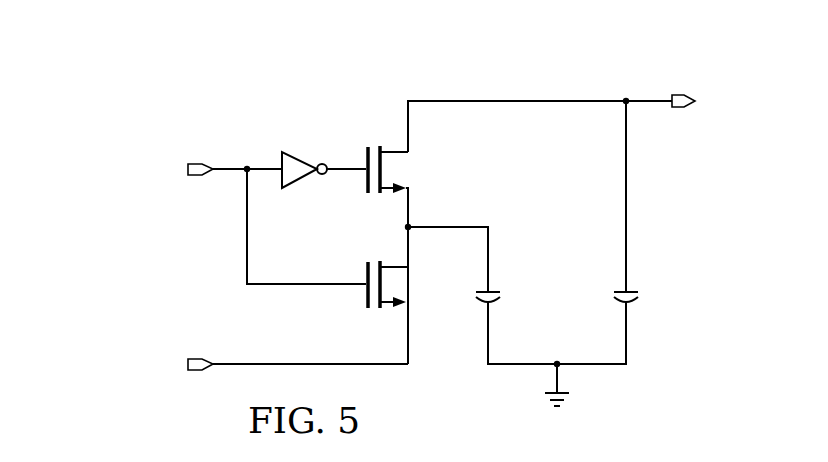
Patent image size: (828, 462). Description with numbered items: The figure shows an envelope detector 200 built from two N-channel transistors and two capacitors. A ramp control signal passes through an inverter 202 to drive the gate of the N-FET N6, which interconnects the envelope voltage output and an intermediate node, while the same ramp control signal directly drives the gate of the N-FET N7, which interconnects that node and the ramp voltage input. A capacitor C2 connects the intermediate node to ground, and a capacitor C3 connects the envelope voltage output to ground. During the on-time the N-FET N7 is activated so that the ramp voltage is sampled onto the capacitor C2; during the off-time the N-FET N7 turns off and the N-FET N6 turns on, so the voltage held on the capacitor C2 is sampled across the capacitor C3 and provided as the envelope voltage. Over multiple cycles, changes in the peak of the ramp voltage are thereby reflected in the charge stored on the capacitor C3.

The envelope detector 200 is at (333, 43).
The inverter 202 is at (323, 141).
The N-FET N6 is at (399, 186).
The N-FET N7 is at (399, 284).
The capacitor C2 is at (509, 301).
The capacitor C3 is at (647, 301).